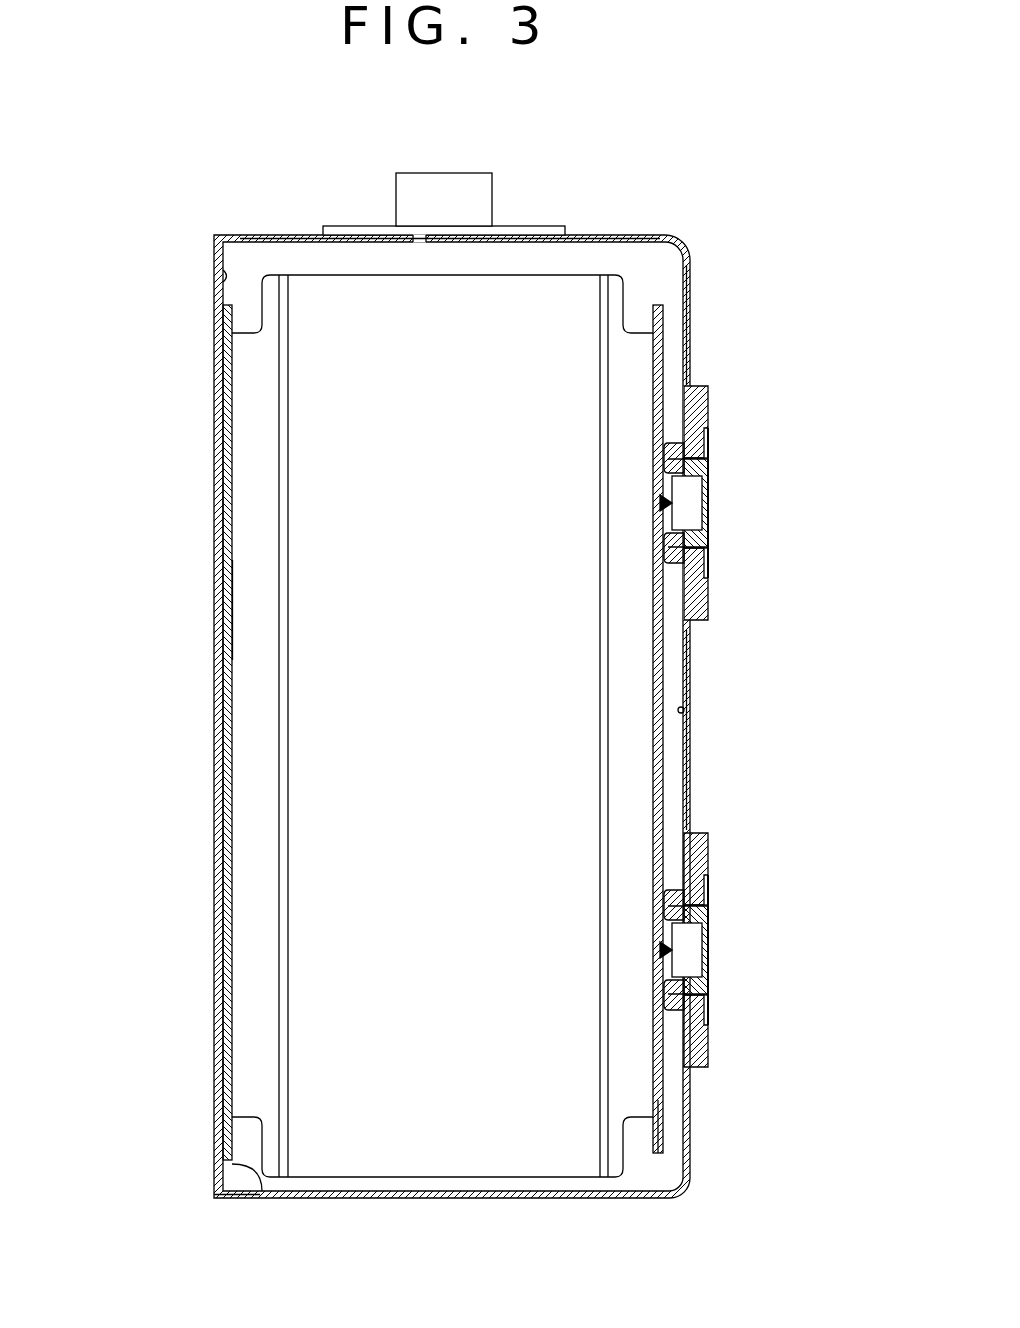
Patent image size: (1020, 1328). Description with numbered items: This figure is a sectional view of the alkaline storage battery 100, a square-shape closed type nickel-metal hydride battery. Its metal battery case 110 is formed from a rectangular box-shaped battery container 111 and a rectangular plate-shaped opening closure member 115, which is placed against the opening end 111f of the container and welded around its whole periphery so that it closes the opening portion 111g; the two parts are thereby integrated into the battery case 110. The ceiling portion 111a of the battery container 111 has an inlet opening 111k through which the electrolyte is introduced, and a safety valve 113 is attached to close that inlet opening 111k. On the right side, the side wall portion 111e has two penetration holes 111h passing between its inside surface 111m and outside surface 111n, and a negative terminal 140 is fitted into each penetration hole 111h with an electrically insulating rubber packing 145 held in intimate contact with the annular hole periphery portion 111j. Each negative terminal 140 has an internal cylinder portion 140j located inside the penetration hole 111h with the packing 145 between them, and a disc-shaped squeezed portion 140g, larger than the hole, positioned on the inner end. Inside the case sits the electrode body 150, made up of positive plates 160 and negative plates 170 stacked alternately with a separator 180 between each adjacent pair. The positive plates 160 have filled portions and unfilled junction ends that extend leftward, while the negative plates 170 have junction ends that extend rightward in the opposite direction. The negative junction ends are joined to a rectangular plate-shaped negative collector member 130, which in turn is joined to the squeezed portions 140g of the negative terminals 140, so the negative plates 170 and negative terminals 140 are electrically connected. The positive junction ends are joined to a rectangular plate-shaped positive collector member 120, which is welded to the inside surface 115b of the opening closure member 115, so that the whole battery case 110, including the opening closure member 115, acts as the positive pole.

The alkaline storage battery 100 is at (620, 200).
The battery case 110 is at (270, 235).
The battery container 111 is at (307, 233).
The ceiling portion 111a is at (590, 235).
The side wall portion 111e is at (690, 280).
The opening end 111f is at (214, 1198).
The opening portion 111g is at (230, 1166).
The penetration hole 111h is at (703, 497).
The hole periphery portion 111j is at (697, 447).
The inlet opening 111k is at (421, 234).
The inside surface 111m is at (686, 710).
The outside surface 111n is at (690, 690).
The safety valve 113 is at (482, 193).
The opening closure member 115 is at (225, 303).
The inside surface 115b is at (225, 275).
The positive collector member 120 is at (228, 610).
The negative collector member 130 is at (668, 1130).
The negative terminal 140 is at (708, 607).
The squeezed portion 140g is at (675, 520).
The internal cylinder portion 140j is at (706, 540).
The packing 145 is at (706, 433).
The electrode body 150 is at (347, 1140).
The positive plate 160 is at (250, 468).
The negative plate 170 is at (627, 386).
The separator 180 is at (568, 305).